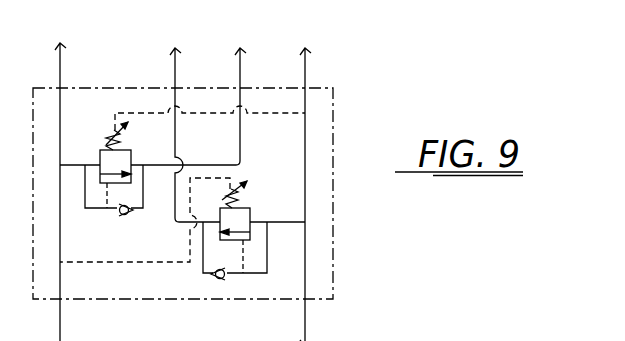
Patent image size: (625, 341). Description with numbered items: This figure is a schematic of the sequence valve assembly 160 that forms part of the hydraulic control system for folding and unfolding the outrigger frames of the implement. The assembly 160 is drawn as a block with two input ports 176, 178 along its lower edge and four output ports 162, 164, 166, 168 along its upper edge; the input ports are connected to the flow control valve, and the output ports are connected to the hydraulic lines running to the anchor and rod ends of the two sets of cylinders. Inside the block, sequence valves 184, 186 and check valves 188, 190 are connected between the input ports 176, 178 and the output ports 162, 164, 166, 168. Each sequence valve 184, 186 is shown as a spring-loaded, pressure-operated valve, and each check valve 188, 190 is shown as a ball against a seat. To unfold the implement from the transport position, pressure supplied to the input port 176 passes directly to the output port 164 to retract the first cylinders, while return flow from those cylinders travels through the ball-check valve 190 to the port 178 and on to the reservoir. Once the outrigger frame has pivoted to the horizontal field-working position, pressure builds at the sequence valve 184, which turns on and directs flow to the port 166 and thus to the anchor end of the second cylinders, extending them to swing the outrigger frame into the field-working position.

The sequence valve assembly 160 is at (333, 239).
The output port 162 is at (175, 58).
The output port 164 is at (60, 63).
The output port 166 is at (240, 58).
The output port 168 is at (305, 62).
The input port 176 is at (109, 323).
The input port 178 is at (305, 310).
The sequence valve 184 is at (100, 162).
The sequence valve 186 is at (250, 215).
The check valve 188 is at (112, 213).
The check valve 190 is at (212, 278).